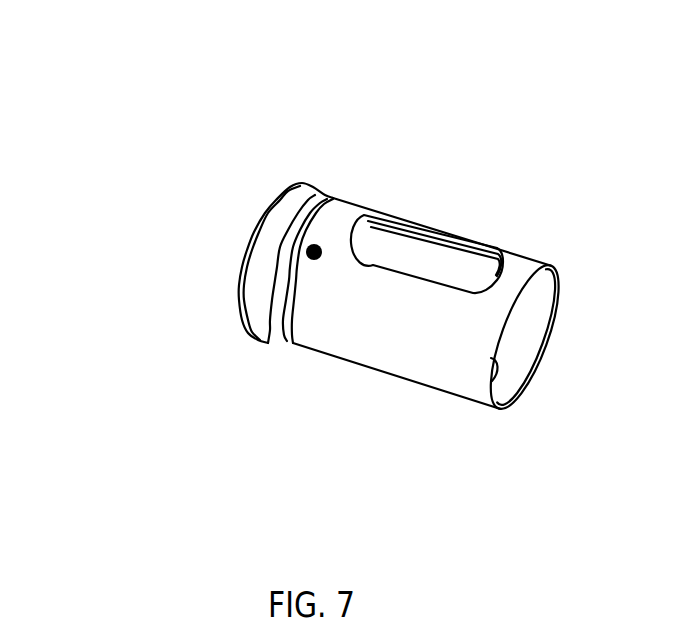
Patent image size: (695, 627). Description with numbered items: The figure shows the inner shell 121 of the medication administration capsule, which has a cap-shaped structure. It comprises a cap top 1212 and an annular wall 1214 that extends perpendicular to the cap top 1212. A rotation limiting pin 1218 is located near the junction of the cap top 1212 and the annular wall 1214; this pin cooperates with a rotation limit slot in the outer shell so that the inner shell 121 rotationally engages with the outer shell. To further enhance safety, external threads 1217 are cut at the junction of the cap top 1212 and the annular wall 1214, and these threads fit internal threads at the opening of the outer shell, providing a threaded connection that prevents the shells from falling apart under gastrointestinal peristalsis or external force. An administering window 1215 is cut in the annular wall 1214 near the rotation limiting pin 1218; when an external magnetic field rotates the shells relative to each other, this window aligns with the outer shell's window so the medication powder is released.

The inner shell 121 is at (405, 100).
The cap top 1212 is at (263, 268).
The annular wall 1214 is at (393, 345).
The administering window 1215 is at (428, 273).
The external threads 1217 is at (295, 317).
The rotation limiting pin 1218 is at (310, 248).